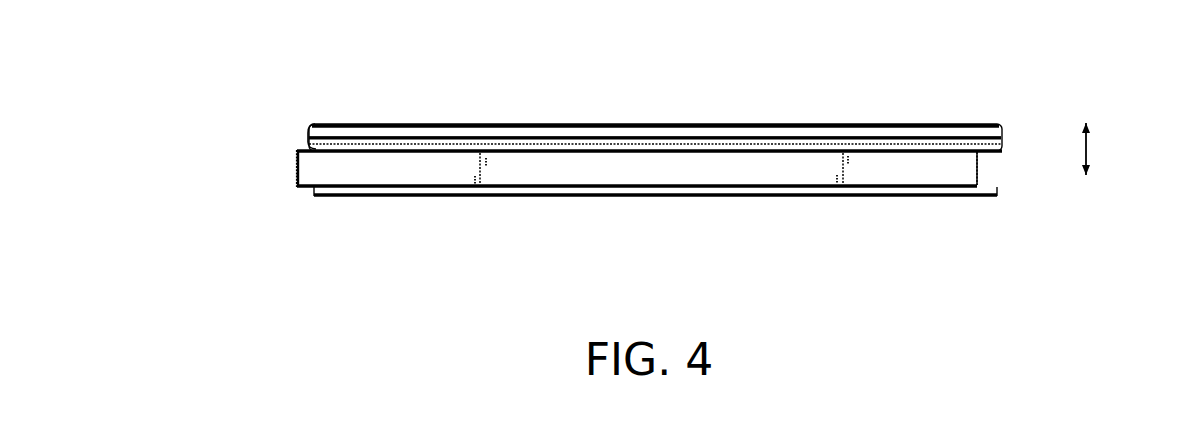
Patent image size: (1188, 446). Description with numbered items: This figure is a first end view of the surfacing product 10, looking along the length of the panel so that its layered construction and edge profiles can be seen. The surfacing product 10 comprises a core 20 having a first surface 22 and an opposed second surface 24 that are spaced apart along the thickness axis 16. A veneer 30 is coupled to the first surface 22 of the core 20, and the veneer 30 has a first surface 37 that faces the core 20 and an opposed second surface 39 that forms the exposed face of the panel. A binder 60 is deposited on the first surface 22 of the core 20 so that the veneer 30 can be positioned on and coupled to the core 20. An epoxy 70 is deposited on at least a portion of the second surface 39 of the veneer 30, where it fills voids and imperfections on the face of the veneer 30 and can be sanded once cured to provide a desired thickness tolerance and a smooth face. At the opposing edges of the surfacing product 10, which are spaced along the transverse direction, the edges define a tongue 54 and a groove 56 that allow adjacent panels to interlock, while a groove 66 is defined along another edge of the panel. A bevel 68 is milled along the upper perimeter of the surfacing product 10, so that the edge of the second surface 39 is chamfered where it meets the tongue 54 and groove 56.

The surfacing product 10 is at (258, 145).
The thickness axis 16 is at (1087, 143).
The core 20 is at (435, 174).
The first surface 22 is at (722, 138).
The second surface 24 is at (780, 196).
The veneer 30 is at (407, 128).
The first surface 37 is at (666, 137).
The second surface 39 is at (610, 125).
The tongue 54 is at (298, 170).
The groove 56 is at (988, 163).
The binder 60 is at (882, 141).
The groove 66 is at (612, 165).
The bevel 68 is at (310, 130).
The epoxy 70 is at (817, 125).